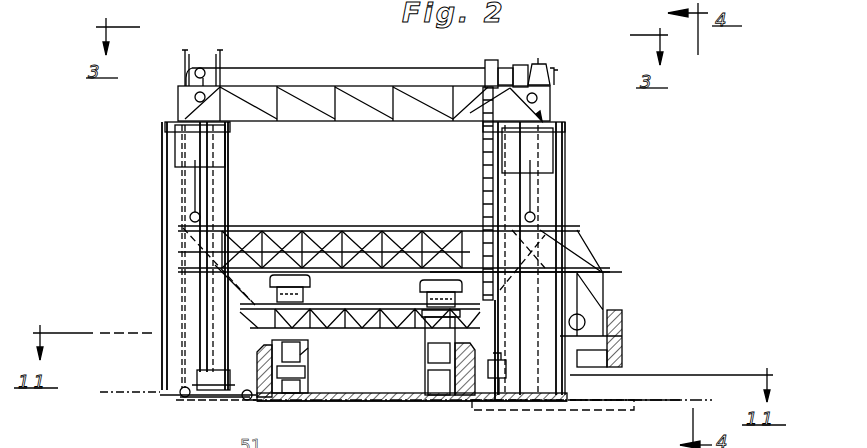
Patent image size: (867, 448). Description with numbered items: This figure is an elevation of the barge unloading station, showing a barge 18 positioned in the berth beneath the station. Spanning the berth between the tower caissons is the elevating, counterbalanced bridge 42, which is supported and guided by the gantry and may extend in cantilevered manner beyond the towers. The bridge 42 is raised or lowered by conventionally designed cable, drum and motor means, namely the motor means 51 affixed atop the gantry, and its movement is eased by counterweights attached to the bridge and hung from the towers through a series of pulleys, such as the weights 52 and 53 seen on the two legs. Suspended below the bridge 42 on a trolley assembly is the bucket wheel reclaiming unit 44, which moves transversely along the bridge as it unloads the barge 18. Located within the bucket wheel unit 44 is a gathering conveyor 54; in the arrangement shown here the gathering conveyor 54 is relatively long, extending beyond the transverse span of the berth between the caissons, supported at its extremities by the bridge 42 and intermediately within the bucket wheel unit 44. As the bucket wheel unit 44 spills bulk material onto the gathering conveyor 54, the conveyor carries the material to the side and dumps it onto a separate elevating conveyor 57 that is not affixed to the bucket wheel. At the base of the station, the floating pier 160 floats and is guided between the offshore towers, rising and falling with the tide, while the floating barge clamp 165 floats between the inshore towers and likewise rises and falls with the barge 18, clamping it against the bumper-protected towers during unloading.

The barge 18 is at (392, 402).
The bridge 42 is at (377, 224).
The bucket wheel reclaiming unit 44 is at (418, 350).
The motor means 51 is at (500, 67).
The weight 52 is at (554, 150).
The weight 53 is at (174, 142).
The gathering conveyor 54 is at (326, 303).
The elevating conveyor 57 is at (610, 356).
The floating pier 160 is at (212, 396).
The floating barge clamp 165 is at (601, 410).